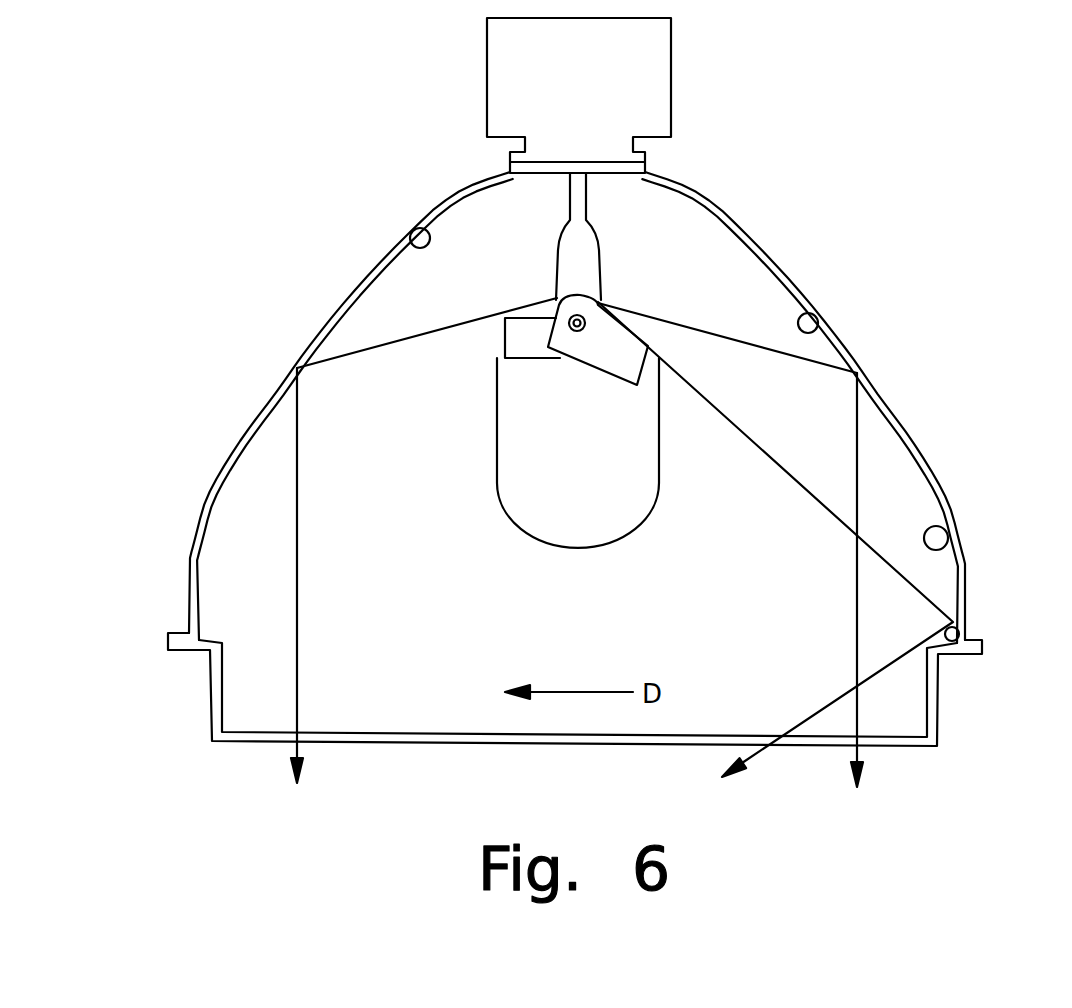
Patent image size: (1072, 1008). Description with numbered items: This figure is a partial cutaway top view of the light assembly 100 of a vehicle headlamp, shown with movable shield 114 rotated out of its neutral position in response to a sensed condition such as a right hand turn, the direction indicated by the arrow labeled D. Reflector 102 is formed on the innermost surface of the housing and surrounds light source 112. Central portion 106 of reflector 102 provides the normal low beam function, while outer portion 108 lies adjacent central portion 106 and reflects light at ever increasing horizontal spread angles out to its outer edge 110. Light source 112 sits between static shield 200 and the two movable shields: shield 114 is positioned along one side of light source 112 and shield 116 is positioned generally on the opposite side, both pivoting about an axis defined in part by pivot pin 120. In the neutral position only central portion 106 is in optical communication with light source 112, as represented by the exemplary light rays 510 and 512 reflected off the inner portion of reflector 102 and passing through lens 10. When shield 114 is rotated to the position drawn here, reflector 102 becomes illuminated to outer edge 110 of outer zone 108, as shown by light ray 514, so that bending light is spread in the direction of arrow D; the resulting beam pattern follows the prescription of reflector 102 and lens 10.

The light assembly 100 is at (170, 203).
The reflector 102 is at (410, 230).
The central portion 106 is at (820, 335).
The outer portion 108 is at (944, 541).
The outer edge 110 is at (963, 640).
The light source 112 is at (599, 262).
The movable shield 114 is at (650, 333).
The movable shield 116 is at (505, 333).
The pivot pin 120 is at (578, 331).
The static shield 200 is at (659, 450).
The light ray 510 is at (857, 512).
The light ray 512 is at (297, 508).
The light ray 514 is at (923, 598).
The lens 10 is at (404, 746).